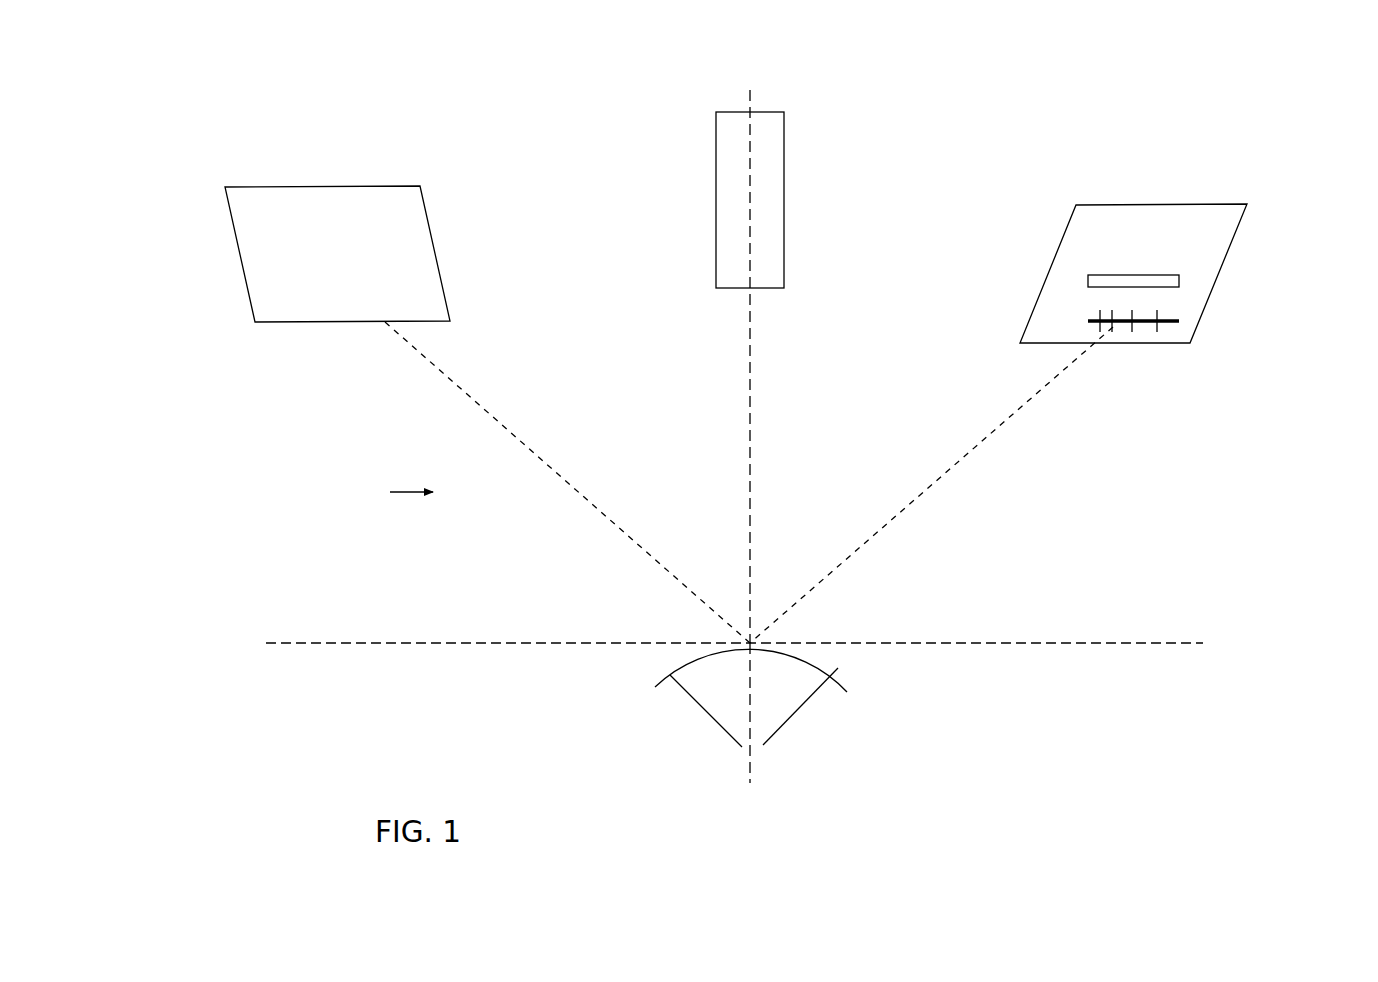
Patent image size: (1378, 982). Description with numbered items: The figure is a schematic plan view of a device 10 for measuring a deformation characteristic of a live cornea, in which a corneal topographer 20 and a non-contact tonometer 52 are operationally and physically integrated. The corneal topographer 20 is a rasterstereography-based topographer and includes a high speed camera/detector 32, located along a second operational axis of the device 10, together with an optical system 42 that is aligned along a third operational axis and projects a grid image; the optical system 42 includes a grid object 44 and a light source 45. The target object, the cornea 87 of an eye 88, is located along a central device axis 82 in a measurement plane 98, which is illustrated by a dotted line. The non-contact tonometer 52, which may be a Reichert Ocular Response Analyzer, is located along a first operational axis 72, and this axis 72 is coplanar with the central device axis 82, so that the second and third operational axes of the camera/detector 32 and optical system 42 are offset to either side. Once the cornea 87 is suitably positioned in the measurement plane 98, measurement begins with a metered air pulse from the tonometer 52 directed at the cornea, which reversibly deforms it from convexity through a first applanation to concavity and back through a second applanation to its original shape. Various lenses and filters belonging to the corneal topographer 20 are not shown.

The device 10 is at (399, 80).
The corneal topographer 20 is at (388, 495).
The high speed camera/detector 32 is at (412, 221).
The optical system 42 is at (1190, 217).
The grid object 44 is at (1192, 320).
The light source 45 is at (1179, 275).
The non-contact tonometer 52 is at (784, 170).
The first operational axis 72 is at (750, 98).
The central device axis 82 is at (757, 726).
The cornea 87 is at (812, 666).
The eye 88 is at (775, 712).
The measurement plane 98 is at (771, 643).